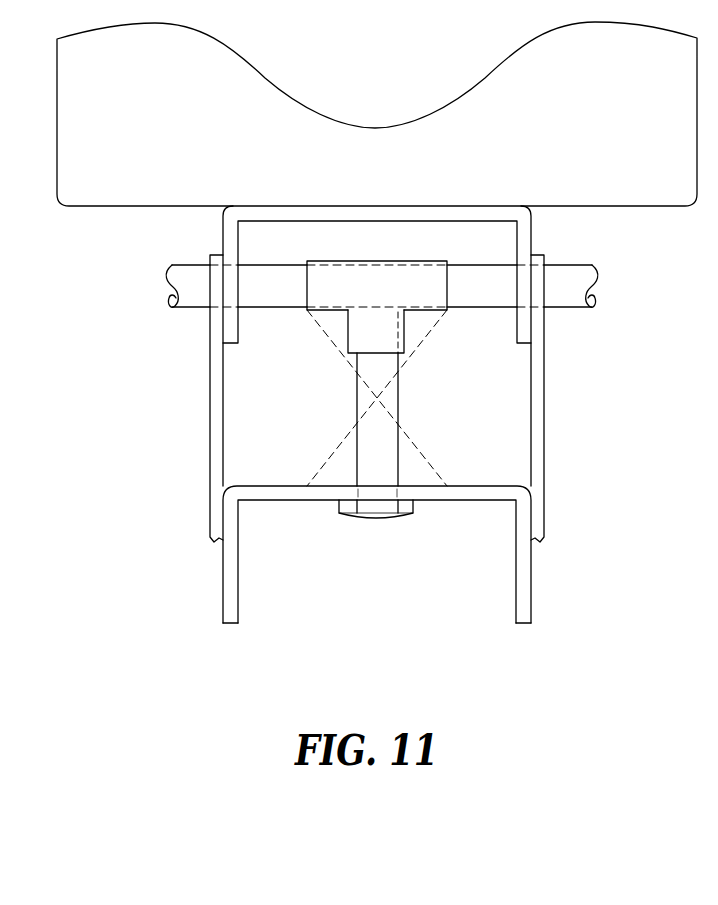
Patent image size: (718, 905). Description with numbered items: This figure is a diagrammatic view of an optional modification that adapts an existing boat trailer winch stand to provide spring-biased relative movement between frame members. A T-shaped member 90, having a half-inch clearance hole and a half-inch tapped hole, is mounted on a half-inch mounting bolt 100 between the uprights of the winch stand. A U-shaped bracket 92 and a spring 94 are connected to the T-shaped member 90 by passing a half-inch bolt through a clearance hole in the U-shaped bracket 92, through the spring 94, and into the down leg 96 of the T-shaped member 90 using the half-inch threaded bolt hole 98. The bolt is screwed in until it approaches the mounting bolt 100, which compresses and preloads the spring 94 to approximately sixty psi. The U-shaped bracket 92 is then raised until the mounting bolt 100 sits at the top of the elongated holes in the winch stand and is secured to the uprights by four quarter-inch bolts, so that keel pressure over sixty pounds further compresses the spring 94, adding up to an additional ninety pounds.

The T-shaped member 90 is at (399, 273).
The U-shaped bracket 92 is at (417, 490).
The spring 94 is at (412, 442).
The down leg 96 is at (375, 337).
The threaded bolt hole 98 is at (373, 505).
The mounting bolt 100 is at (478, 292).